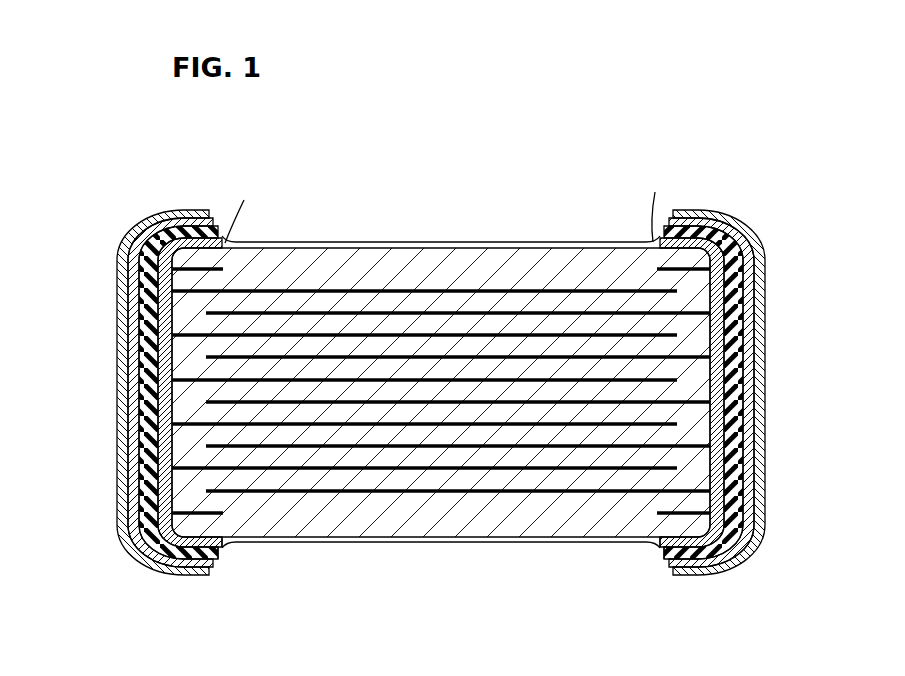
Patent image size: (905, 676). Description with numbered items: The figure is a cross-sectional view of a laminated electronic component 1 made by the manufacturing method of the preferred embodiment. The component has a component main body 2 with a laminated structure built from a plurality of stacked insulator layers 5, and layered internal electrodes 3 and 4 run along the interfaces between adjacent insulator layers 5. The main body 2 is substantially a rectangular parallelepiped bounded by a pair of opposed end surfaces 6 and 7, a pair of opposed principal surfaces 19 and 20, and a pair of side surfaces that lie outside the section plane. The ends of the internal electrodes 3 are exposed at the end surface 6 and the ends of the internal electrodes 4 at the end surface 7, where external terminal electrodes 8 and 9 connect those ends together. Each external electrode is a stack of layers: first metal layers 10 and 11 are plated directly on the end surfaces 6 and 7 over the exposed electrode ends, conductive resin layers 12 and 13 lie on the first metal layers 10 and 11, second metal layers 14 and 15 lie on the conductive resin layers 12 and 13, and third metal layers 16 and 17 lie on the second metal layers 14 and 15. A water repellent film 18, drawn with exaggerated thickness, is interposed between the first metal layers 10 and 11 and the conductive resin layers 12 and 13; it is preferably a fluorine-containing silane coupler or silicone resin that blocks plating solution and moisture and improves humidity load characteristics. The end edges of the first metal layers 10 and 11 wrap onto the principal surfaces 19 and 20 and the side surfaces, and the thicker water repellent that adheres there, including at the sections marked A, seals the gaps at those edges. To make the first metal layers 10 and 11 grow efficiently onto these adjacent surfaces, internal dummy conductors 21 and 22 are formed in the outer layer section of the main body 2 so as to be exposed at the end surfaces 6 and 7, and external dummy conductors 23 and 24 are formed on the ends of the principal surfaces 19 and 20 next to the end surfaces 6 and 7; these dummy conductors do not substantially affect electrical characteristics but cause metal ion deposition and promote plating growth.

The laminated electronic component 1 is at (253, 160).
The component main body 2 is at (578, 247).
The internal electrodes 3 is at (389, 335).
The internal electrodes 4 is at (530, 352).
The insulator layers 5 is at (461, 325).
The end surface 6 is at (166, 484).
The end surface 7 is at (713, 483).
The external terminal electrode 8 is at (52, 295).
The external terminal electrode 9 is at (830, 255).
The first metal layer 10 is at (166, 298).
The first metal layer 11 is at (714, 279).
The conductive resin layer 12 is at (150, 337).
The conductive resin layer 13 is at (740, 303).
The second metal layer 14 is at (136, 369).
The second metal layer 15 is at (746, 337).
The third metal layer 16 is at (122, 398).
The third metal layer 17 is at (758, 367).
The water repellent film 18 is at (553, 542).
The principal surface 19 is at (319, 243).
The principal surface 20 is at (381, 541).
The internal dummy conductor 21 is at (176, 546).
The internal dummy conductor 22 is at (698, 516).
The external dummy conductor 23 is at (204, 556).
The external dummy conductor 24 is at (673, 549).